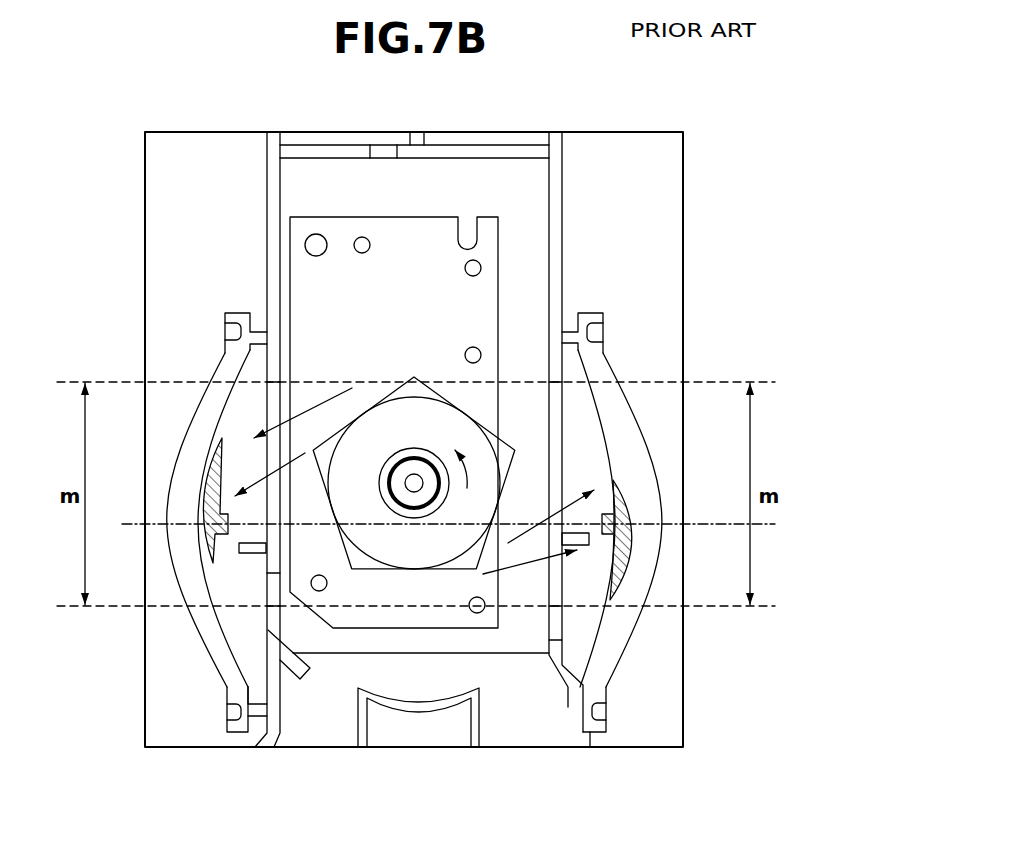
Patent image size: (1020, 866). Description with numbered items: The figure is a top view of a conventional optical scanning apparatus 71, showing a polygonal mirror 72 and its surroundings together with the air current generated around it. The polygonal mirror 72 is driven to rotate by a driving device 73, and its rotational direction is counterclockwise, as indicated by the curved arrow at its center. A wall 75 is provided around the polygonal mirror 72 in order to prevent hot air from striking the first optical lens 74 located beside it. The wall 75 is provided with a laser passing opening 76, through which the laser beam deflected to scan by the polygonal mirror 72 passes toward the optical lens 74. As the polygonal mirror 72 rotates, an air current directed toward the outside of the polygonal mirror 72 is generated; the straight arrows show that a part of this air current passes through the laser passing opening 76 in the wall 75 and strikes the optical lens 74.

The conventional optical scanning apparatus 71 is at (683, 168).
The polygonal mirror 72 is at (447, 573).
The driving device 73 is at (387, 247).
The first optical lens 74 is at (613, 645).
The wall 75 is at (555, 263).
The laser passing opening 76 is at (554, 420).